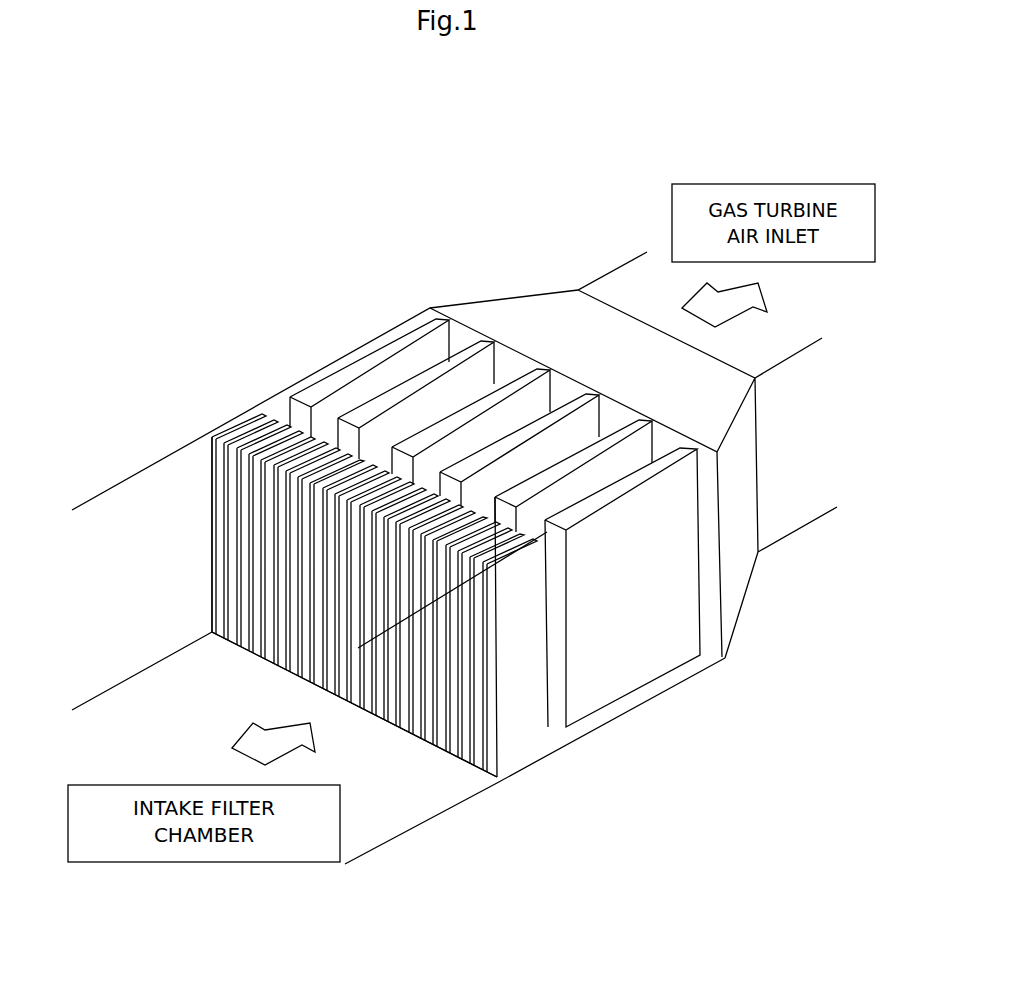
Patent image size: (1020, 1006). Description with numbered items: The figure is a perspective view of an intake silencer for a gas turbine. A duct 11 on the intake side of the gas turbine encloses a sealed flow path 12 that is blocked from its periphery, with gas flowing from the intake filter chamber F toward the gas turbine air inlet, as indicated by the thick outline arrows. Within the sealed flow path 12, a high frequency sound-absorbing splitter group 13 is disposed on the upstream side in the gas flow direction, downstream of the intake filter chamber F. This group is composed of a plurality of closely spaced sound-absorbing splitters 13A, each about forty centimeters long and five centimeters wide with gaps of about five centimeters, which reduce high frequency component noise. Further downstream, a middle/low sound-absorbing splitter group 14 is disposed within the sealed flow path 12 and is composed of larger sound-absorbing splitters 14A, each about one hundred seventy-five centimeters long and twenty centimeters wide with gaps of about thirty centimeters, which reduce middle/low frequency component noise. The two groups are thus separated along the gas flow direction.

The duct 11 is at (148, 466).
The sealed flow path 12 is at (499, 777).
The high frequency sound-absorbing splitter group 13 is at (231, 409).
The sound-absorbing splitter 13A is at (376, 690).
The middle/low sound-absorbing splitter group 14 is at (342, 344).
The sound-absorbing splitter 14A is at (642, 430).
The intake filter chamber F is at (417, 806).